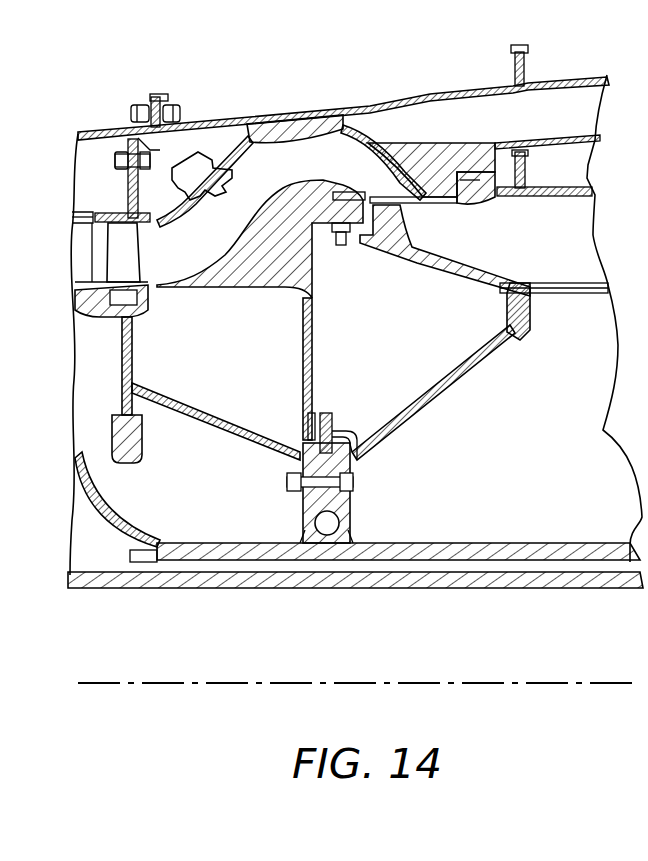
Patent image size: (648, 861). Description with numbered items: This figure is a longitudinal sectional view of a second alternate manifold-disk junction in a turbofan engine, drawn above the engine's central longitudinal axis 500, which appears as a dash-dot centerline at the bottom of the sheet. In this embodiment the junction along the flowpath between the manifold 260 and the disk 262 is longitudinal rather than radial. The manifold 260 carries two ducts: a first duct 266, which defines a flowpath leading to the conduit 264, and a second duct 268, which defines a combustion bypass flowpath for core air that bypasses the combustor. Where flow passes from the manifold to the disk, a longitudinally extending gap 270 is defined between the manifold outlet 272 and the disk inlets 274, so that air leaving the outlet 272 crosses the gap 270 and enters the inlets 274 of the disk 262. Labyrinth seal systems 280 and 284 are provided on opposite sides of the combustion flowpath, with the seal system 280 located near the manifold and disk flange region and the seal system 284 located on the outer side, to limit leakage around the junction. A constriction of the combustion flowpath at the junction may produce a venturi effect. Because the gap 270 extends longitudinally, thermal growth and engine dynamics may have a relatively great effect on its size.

The manifold 260 is at (257, 268).
The disk 262 is at (437, 292).
The conduit 264 is at (580, 254).
The duct 266 is at (367, 171).
The duct 268 is at (515, 131).
The longitudinally extending gap 270 is at (468, 206).
The manifold outlet 272 is at (388, 197).
The disk inlets 274 is at (410, 262).
The labyrinth seal system 280 is at (340, 246).
The labyrinth seal system 284 is at (488, 176).
The central longitudinal axis 500 is at (500, 683).